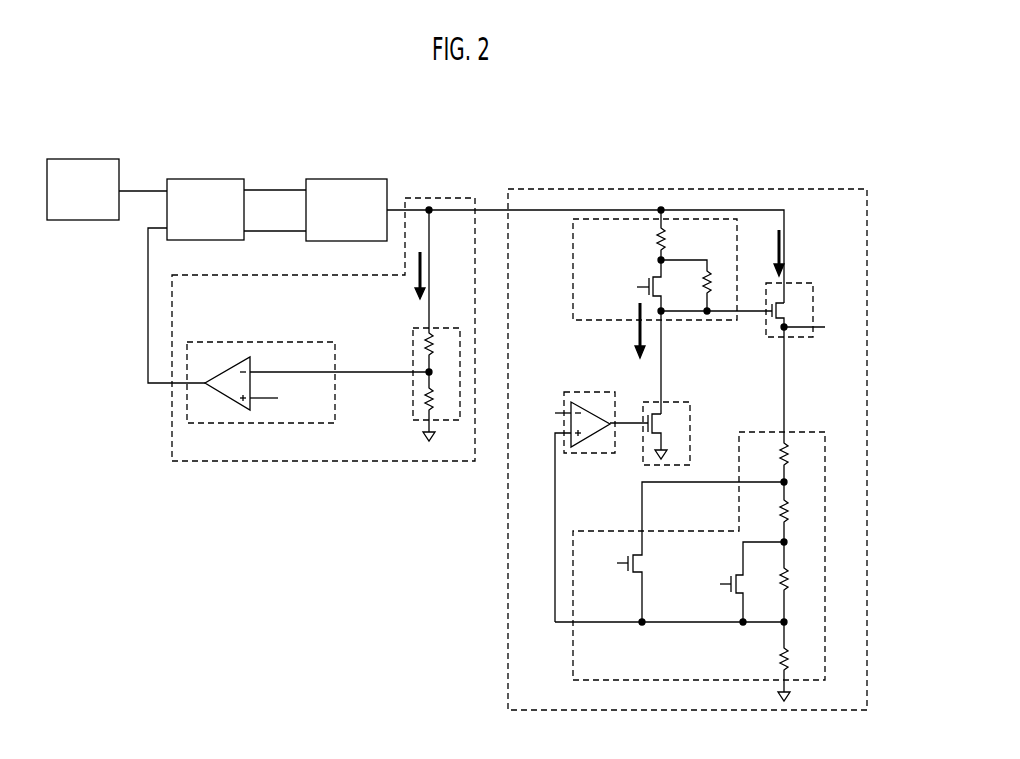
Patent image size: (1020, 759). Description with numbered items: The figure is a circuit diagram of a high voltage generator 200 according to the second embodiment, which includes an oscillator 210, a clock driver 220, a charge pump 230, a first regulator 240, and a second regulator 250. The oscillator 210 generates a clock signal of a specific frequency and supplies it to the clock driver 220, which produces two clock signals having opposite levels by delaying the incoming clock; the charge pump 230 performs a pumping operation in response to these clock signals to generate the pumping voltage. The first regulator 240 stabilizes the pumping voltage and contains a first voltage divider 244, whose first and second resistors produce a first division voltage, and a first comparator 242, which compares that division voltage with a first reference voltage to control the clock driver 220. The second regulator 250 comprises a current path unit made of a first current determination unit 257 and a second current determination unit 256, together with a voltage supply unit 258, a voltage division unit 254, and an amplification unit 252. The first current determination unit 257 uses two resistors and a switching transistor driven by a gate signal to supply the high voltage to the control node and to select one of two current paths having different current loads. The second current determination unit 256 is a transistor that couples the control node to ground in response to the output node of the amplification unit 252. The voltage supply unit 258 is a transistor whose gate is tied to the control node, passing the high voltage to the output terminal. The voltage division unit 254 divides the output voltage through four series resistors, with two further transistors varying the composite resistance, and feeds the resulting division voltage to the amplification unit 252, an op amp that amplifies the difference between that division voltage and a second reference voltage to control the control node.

The high voltage generator 200 is at (318, 615).
The oscillator 210 is at (87, 159).
The clock driver 220 is at (205, 179).
The charge pump 230 is at (343, 179).
The first regulator 240 is at (314, 462).
The first comparator 242 is at (306, 342).
The first voltage divider 244 is at (413, 415).
The second regulator 250 is at (684, 189).
The amplification unit 252 is at (590, 453).
The voltage division unit 254 is at (825, 478).
The second current determination unit 256 is at (690, 412).
The first current determination unit 257 is at (597, 219).
The voltage supply unit 258 is at (807, 337).